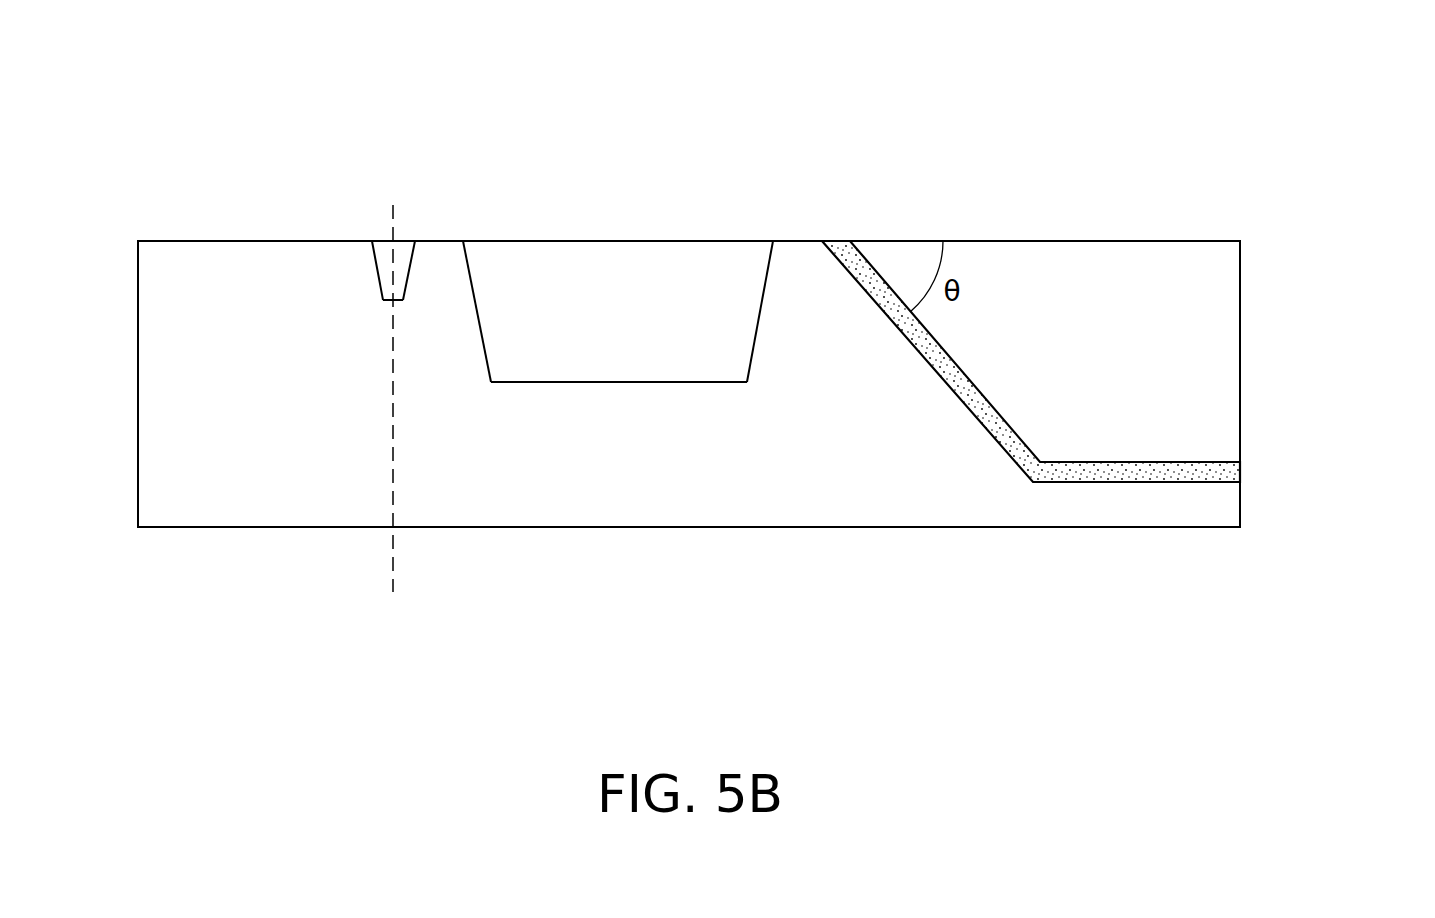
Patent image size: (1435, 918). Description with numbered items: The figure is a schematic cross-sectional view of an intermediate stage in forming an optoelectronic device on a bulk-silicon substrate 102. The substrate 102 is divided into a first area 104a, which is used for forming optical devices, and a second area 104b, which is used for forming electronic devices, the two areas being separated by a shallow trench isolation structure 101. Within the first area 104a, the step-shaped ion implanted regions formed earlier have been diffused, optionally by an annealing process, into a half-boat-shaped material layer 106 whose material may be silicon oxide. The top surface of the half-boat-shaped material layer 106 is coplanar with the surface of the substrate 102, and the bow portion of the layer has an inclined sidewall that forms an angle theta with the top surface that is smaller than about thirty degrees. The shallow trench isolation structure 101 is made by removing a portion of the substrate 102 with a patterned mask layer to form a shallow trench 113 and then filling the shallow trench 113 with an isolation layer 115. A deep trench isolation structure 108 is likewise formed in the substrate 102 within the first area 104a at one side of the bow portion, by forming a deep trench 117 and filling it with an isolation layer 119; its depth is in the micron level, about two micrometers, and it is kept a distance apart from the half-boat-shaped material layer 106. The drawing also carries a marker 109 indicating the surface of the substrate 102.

The shallow trench isolation structure 101 is at (329, 180).
The substrate 102 is at (1202, 503).
The first area 104a is at (393, 560).
The second area 104b is at (138, 560).
The half-boat-shaped material layer 106 is at (1217, 470).
The deep trench isolation structure 108 is at (610, 221).
The top surface of substrate 109 is at (1240, 288).
The shallow trench 113 is at (377, 272).
The isolation layer 115 is at (373, 214).
The deep trench 117 is at (473, 292).
The isolation layer 119 is at (619, 255).